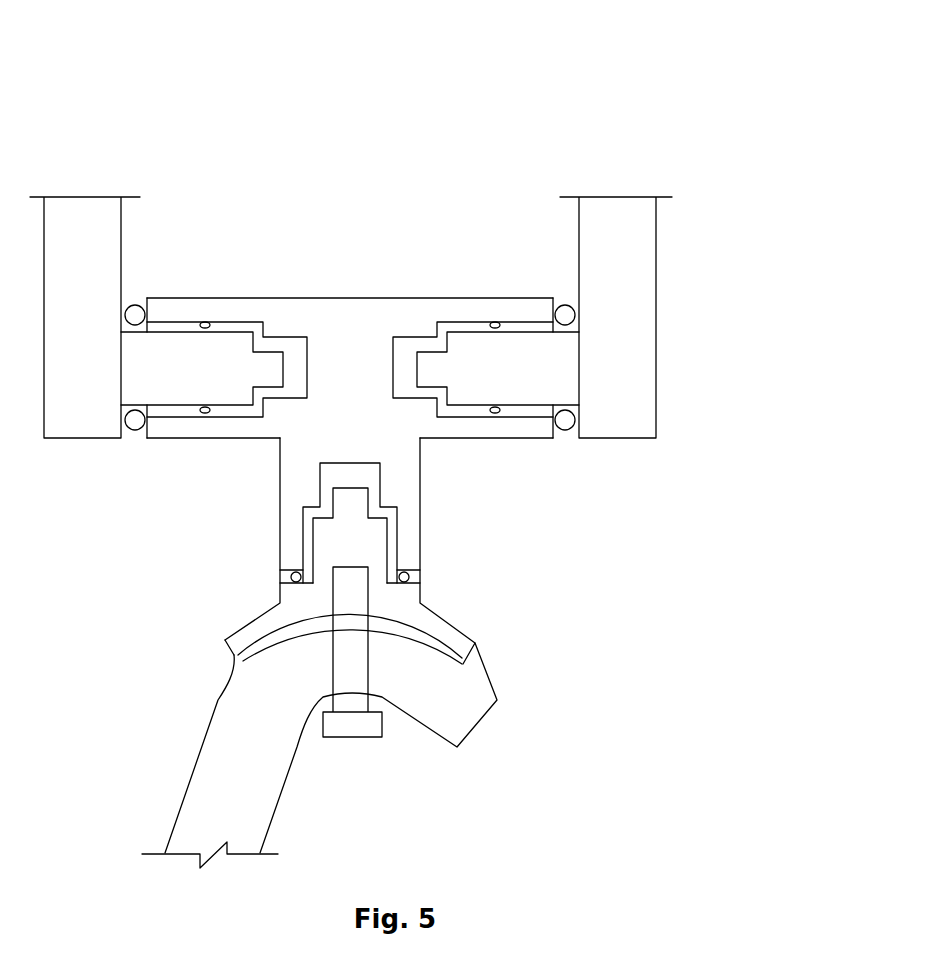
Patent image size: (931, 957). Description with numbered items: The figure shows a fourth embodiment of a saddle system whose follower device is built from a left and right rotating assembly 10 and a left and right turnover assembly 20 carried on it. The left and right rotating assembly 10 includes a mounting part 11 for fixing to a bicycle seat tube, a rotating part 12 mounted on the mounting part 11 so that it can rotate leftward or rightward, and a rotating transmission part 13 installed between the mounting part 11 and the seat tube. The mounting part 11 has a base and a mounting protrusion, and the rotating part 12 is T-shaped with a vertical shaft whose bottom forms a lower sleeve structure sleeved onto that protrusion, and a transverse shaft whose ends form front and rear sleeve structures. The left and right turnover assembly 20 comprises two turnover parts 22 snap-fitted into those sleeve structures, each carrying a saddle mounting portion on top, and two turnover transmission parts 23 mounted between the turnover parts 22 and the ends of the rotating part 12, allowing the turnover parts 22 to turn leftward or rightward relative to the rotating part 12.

The left and right rotating assembly 10 is at (760, 492).
The mounting part 11 is at (383, 583).
The rotating part 12 is at (358, 428).
The rotating transmission part 13 is at (393, 530).
The left and right turnover assembly 20 is at (198, 87).
The turnover part 22 is at (105, 269).
The turnover transmission part 23 is at (573, 297).